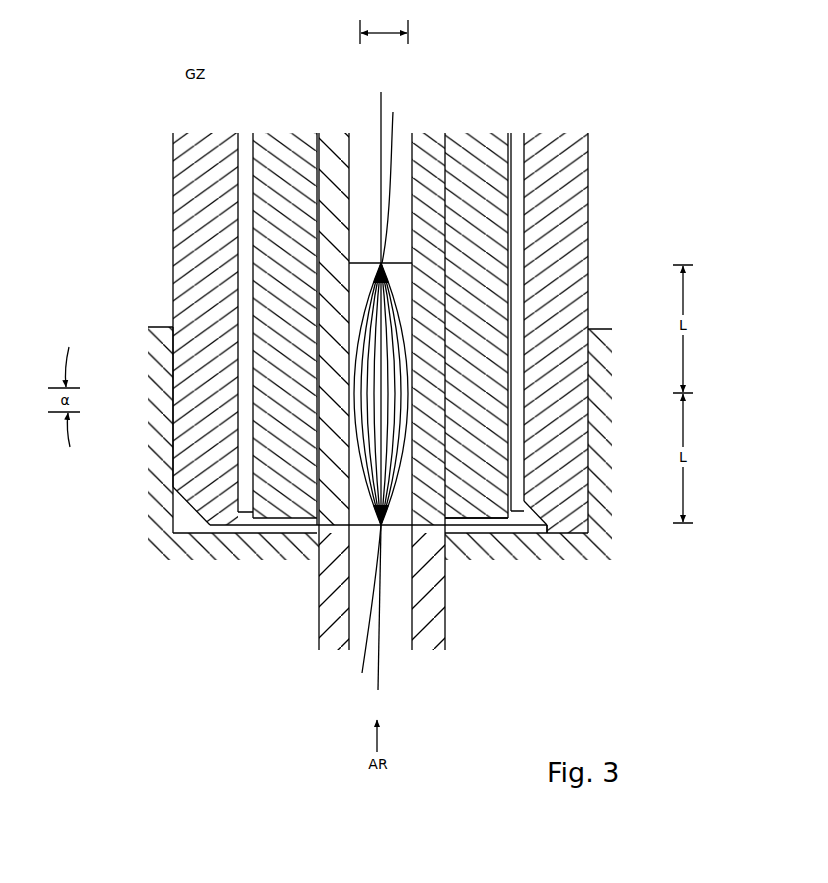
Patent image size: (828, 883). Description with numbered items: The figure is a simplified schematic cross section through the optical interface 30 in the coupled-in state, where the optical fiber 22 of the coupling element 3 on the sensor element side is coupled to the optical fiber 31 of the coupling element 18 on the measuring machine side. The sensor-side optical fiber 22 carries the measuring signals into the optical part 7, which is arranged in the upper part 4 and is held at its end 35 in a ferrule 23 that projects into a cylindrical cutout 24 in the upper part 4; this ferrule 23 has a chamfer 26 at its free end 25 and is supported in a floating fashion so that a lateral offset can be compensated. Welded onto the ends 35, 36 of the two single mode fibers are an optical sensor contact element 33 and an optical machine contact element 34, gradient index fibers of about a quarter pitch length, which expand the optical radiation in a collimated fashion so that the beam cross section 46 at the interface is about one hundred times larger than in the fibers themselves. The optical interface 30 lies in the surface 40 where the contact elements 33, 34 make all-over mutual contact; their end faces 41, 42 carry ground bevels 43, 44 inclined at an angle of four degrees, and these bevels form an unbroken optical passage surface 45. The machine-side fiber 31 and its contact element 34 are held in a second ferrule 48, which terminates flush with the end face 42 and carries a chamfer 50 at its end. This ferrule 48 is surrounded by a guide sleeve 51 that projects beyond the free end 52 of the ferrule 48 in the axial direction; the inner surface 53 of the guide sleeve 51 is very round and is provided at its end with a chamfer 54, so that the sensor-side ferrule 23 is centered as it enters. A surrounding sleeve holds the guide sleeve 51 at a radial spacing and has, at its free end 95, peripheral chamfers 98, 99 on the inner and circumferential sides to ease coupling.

The coupling element on the sensor element side 3 is at (225, 617).
The upper part 4 is at (524, 553).
The optical part 7 is at (198, 555).
The coupling element on the measuring machine side 18 is at (542, 68).
The optical fiber 22 is at (394, 637).
The ferrule 23 is at (330, 612).
The cylindrical cutout 24 is at (228, 530).
The free end 25 is at (352, 395).
The chamfer 26 is at (398, 392).
The optical interface 30 is at (398, 385).
The optical fiber 31 is at (369, 150).
The optical sensor contact element 33 is at (447, 560).
The optical machine contact element 34 is at (398, 290).
The end of optical fiber 35 is at (362, 608).
The end of optical fiber 36 is at (395, 176).
The surface 40 is at (402, 398).
The end face 41 is at (352, 384).
The end face 42 is at (398, 396).
The ground bevel 43 is at (346, 412).
The ground bevel 44 is at (352, 388).
The optical passage surface 45 is at (405, 405).
The beam cross section 46 is at (384, 29).
The ferrule 48 is at (433, 147).
The chamfer 50 is at (352, 394).
The guide sleeve 51 is at (482, 187).
The free end of ferrule 52 is at (352, 400).
The inner surface 53 is at (347, 455).
The chamfer 54 is at (397, 507).
The free end of sleeve 95 is at (548, 528).
The peripheral chamfer 98 is at (190, 506).
The peripheral chamfer 99 is at (530, 523).